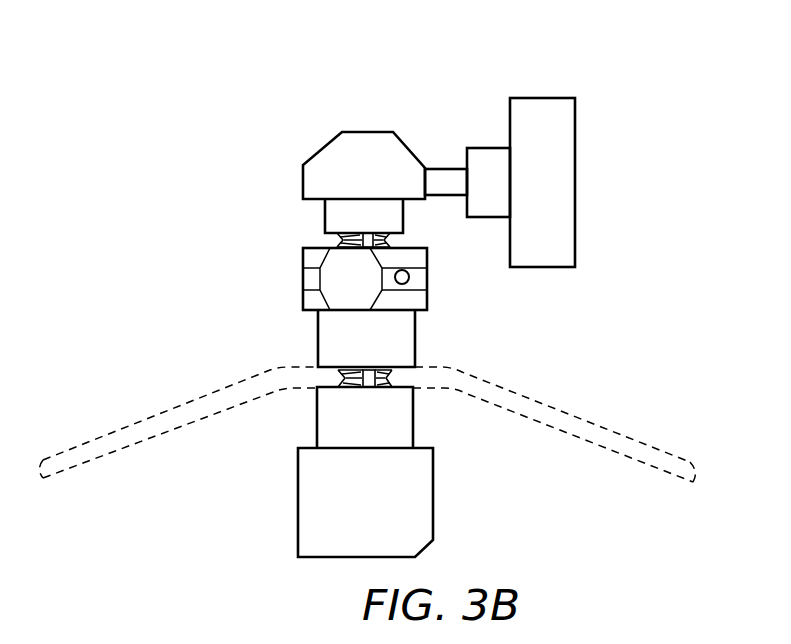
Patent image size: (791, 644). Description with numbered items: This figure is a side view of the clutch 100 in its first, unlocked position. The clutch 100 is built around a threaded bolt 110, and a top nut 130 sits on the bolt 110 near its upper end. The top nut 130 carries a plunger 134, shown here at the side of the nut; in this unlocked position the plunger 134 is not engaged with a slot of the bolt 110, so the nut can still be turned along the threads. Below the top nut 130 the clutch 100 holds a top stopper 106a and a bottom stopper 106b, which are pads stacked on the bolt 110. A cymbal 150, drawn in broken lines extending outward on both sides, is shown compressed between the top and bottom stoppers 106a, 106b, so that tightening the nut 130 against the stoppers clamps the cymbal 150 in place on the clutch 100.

The clutch 100 is at (261, 136).
The threaded bolt 110 is at (340, 243).
The top nut 130 is at (303, 280).
The plunger 134 is at (409, 279).
The top stopper 106a is at (317, 347).
The bottom stopper 106b is at (405, 423).
The cymbal 150 is at (117, 450).